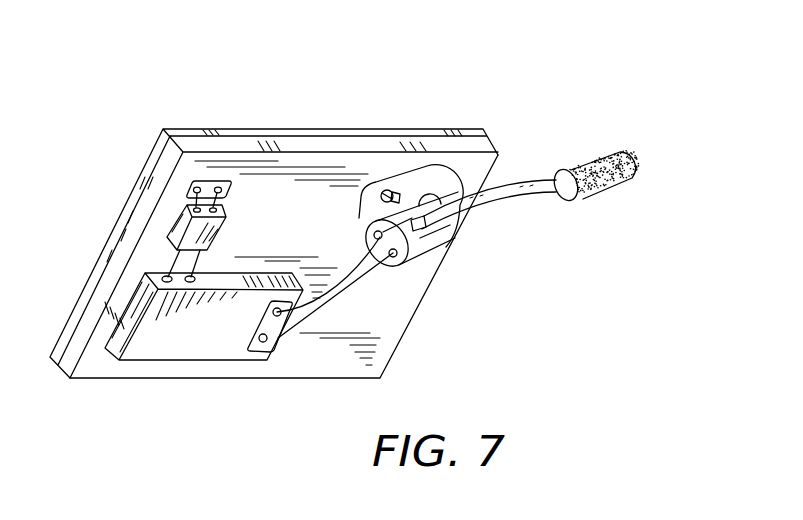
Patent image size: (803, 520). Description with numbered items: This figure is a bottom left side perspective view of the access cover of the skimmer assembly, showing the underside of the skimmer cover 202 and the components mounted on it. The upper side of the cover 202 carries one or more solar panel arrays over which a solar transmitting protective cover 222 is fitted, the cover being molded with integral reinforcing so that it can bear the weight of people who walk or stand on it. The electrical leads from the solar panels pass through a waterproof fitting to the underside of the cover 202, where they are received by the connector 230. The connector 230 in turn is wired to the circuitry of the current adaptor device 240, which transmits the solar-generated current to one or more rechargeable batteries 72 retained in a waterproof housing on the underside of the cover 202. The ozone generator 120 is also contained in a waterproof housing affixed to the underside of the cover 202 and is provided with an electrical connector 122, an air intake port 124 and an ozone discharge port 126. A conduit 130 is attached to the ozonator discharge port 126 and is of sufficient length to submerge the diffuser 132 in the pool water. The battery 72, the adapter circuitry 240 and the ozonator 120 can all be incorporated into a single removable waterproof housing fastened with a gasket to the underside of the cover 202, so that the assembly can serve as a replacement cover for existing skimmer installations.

The skimmer cover 202 is at (308, 207).
The solar transmitting protective cover 222 is at (163, 128).
The connector 230 is at (193, 180).
The current adaptor device 240 is at (183, 237).
The rechargeable battery 72 is at (188, 348).
The electrical connector 122 is at (400, 256).
The ozone generator 120 is at (438, 189).
The air intake port 124 is at (390, 191).
The ozone discharge port 126 is at (418, 214).
The conduit 130 is at (548, 194).
The diffuser 132 is at (633, 157).